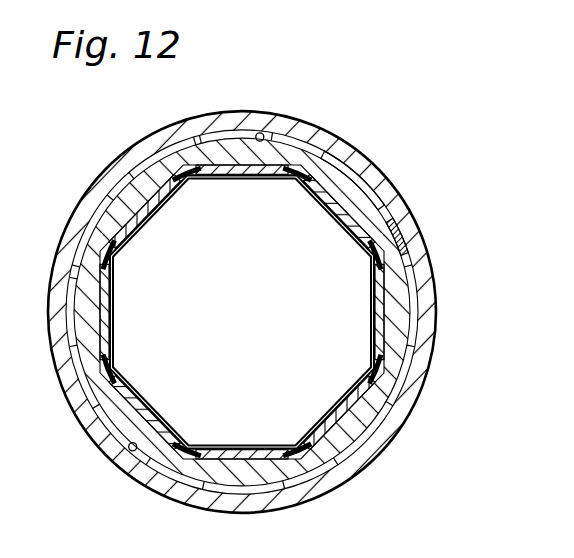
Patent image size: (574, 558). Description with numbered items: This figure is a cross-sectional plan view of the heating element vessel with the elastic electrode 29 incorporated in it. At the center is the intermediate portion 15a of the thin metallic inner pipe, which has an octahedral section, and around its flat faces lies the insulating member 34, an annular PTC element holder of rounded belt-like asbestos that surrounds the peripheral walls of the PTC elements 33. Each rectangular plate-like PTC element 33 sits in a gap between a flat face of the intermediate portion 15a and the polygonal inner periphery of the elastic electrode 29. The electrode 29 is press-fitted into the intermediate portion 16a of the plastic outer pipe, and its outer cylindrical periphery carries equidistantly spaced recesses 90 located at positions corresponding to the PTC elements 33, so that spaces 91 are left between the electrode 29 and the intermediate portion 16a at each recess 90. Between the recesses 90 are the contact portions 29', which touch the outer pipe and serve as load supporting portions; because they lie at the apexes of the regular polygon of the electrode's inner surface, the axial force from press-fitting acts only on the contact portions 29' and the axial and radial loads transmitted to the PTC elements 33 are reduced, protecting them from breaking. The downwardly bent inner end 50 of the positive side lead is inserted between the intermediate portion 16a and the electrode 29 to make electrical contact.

The intermediate portion of the outer pipe 16a is at (430, 307).
The intermediate portion of the inner pipe 15a is at (147, 415).
The insulating member 34 is at (190, 180).
The PTC element 33 is at (338, 195).
The elastic electrode 29 is at (374, 178).
The contact portions of the electrode 29' is at (120, 176).
The inner end of the positive side lead 50 is at (410, 222).
The recess 90 is at (264, 137).
The space 91 is at (236, 135).